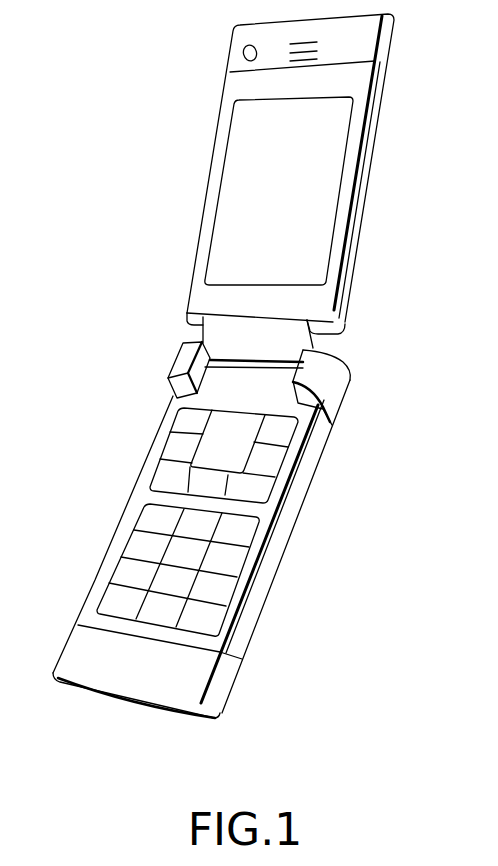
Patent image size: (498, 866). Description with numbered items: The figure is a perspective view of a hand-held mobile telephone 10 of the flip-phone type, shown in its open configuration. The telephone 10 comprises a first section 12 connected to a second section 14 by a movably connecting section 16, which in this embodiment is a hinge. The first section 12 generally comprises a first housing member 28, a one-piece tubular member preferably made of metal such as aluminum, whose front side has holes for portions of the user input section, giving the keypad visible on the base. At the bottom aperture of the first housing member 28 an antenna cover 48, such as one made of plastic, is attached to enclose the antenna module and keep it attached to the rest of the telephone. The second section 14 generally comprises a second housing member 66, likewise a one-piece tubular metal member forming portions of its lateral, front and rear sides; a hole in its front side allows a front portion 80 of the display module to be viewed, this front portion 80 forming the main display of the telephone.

The telephone 10 is at (128, 110).
The first section 12 is at (128, 507).
The second section 14 is at (368, 170).
The connecting section 16 is at (202, 343).
The first housing member 28 is at (158, 633).
The antenna cover 48 is at (183, 695).
The second housing member 66 is at (353, 215).
The front portion of display module 80 is at (222, 235).